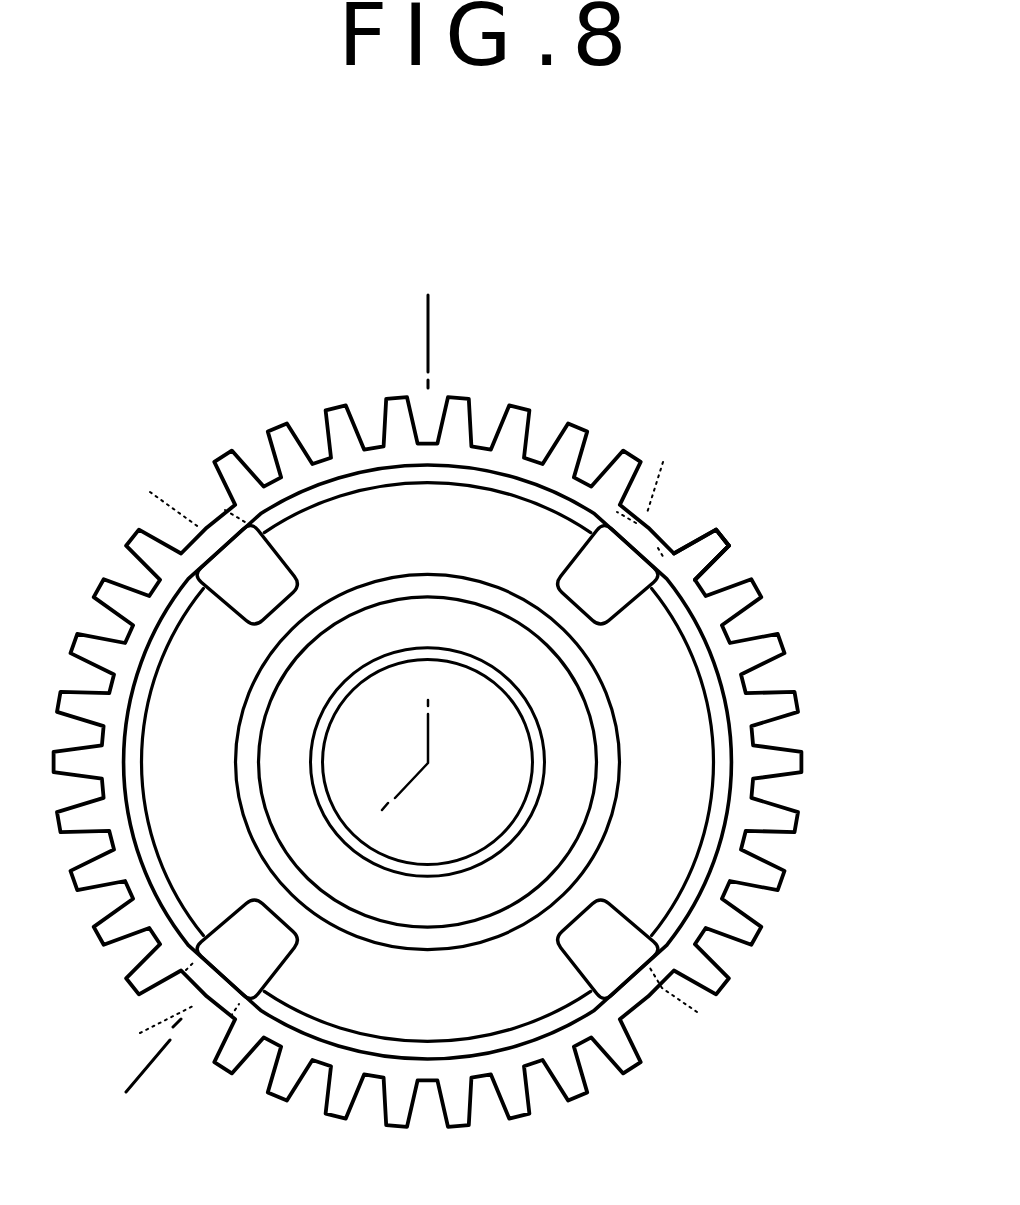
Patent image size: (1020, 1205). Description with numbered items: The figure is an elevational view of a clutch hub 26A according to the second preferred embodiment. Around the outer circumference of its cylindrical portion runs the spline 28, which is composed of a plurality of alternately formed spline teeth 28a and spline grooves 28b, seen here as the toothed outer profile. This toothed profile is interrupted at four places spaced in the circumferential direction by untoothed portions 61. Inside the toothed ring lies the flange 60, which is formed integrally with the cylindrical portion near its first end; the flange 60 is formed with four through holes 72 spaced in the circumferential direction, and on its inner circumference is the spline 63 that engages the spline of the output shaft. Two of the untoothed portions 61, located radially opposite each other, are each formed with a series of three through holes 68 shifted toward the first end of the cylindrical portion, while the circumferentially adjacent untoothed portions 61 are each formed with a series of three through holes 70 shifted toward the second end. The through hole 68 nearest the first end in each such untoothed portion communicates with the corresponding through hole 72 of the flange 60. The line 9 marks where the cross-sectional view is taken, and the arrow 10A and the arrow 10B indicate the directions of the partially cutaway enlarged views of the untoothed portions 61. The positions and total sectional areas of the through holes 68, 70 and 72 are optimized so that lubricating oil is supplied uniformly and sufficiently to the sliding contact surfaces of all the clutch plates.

The clutch hub 26A is at (304, 388).
The line 9— 9 is at (440, 318).
The untoothed portions 61 is at (212, 518).
The through holes 70 is at (428, 755).
The through holes 72 is at (241, 604).
The through holes 68 is at (395, 740).
The arrow 10A is at (686, 490).
The arrow 10B is at (676, 1036).
The spline 28 is at (860, 510).
The spline teeth 28a is at (725, 532).
The spline grooves 28b is at (730, 560).
The flange 60 is at (705, 738).
The spline 63 is at (490, 684).